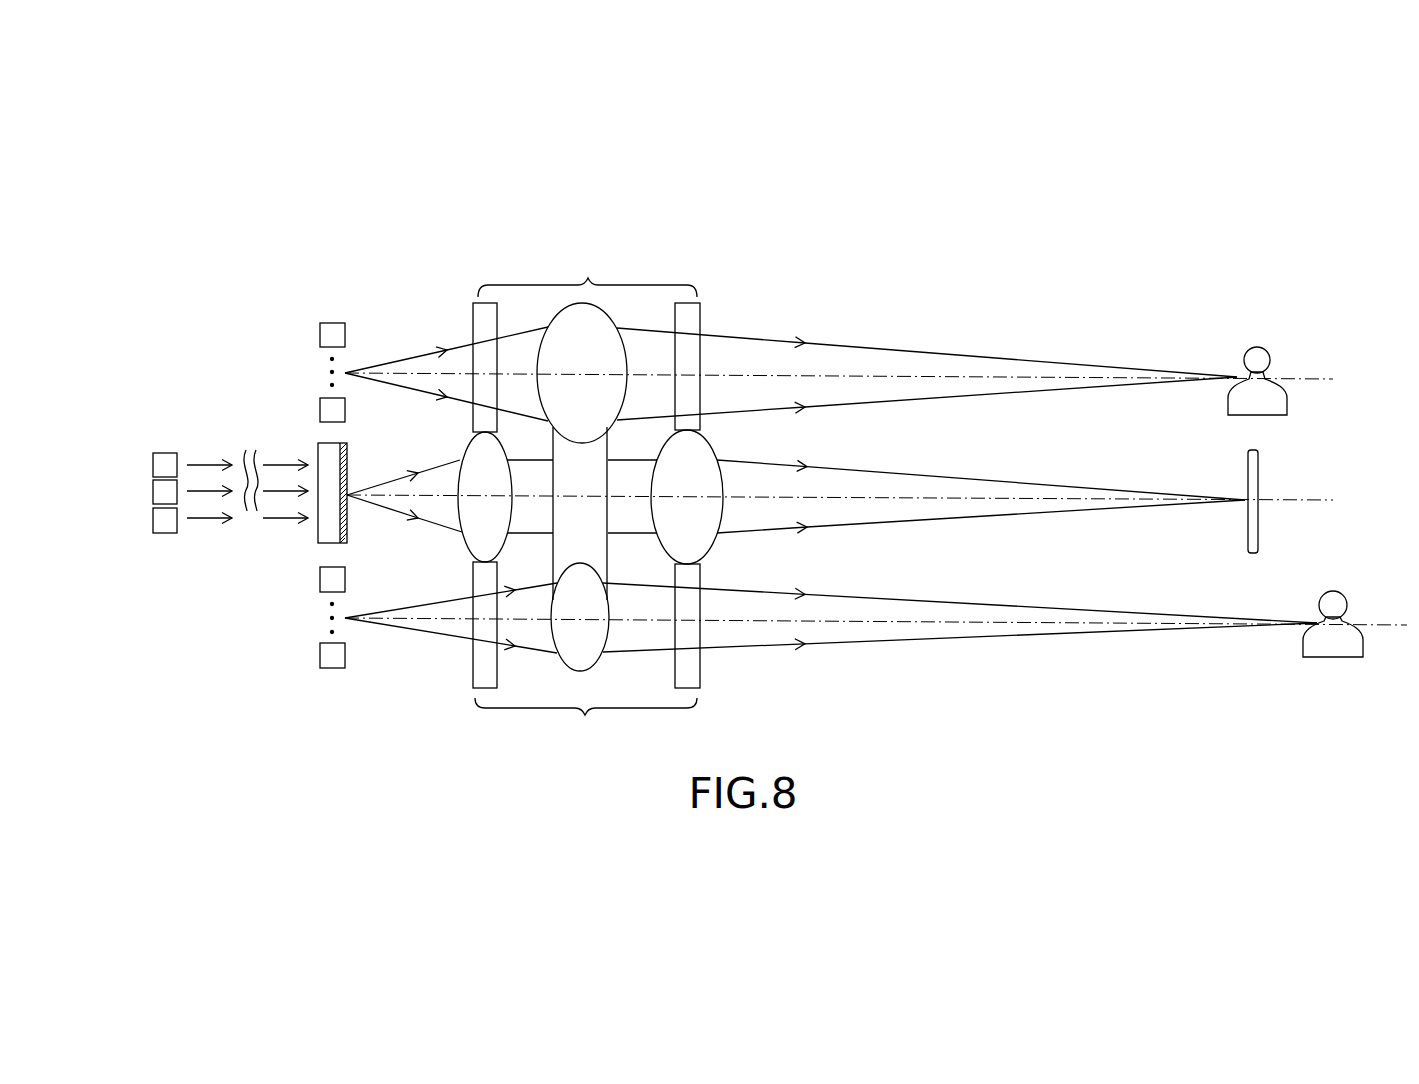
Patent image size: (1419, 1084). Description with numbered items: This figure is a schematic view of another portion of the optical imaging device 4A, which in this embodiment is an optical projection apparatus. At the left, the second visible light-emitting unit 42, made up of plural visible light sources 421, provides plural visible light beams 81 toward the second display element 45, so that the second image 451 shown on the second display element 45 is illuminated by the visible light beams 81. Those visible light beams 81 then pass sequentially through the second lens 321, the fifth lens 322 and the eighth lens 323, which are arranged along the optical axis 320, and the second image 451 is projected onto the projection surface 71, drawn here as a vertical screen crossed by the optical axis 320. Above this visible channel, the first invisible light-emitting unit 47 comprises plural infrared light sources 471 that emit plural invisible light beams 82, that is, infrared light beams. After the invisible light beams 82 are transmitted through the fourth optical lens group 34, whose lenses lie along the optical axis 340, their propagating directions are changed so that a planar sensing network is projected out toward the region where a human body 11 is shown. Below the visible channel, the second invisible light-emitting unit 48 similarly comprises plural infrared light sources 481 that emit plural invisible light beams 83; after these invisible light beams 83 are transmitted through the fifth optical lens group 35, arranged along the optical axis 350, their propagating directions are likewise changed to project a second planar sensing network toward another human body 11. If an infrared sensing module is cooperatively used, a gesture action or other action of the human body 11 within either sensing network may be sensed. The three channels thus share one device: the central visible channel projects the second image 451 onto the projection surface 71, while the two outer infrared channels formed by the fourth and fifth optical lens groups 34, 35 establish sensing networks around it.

The optical imaging device 4A is at (402, 203).
The first invisible light-emitting unit 47 is at (283, 351).
The infrared light sources 471 is at (327, 322).
The second visible light-emitting unit 42 is at (161, 488).
The visible light sources 421 is at (162, 453).
The visible light beams 81 is at (207, 493).
The second display element 45 is at (331, 499).
The second image 451 is at (348, 523).
The second invisible light-emitting unit 48 is at (288, 638).
The infrared light sources 481 is at (318, 578).
The fourth optical lens group 34 is at (587, 275).
The fifth optical lens group 35 is at (586, 720).
The second lens 321 is at (480, 535).
The fifth lens 322 is at (602, 515).
The eighth lens 323 is at (708, 517).
The invisible light beams 82 is at (860, 342).
The invisible light beams 83 is at (860, 592).
The optical axis 320 is at (1268, 518).
The projection surface 71 is at (1245, 527).
The optical axis 340 is at (1293, 378).
The optical axis 350 is at (1363, 623).
The human body 11 is at (1302, 528).